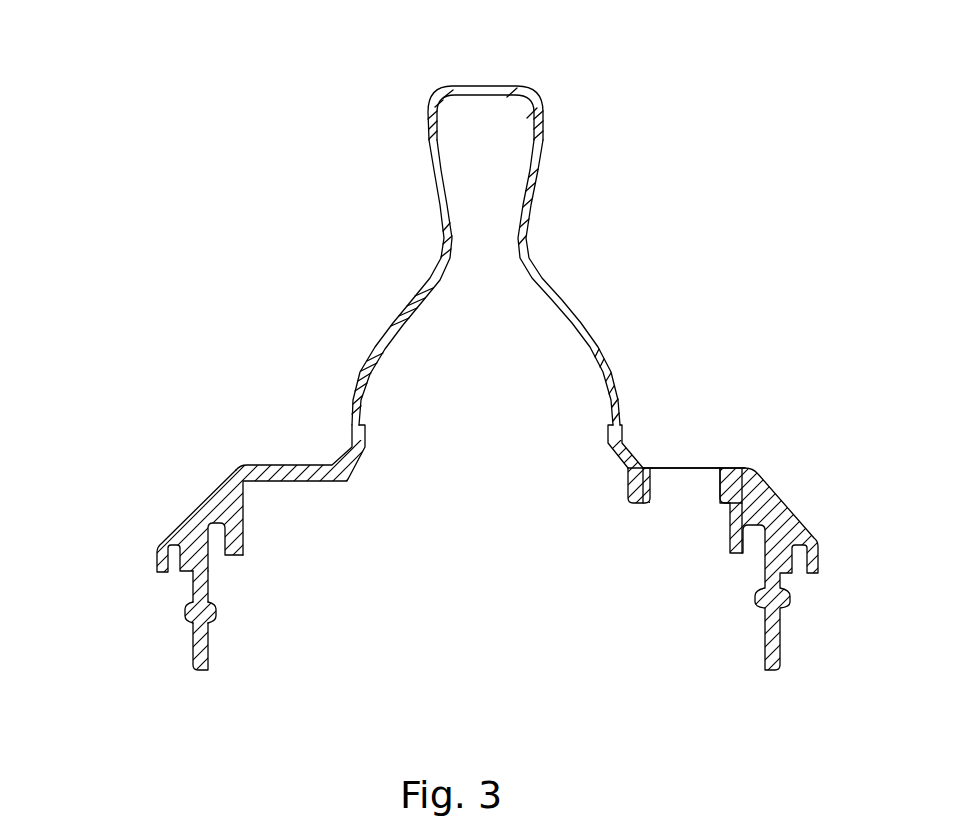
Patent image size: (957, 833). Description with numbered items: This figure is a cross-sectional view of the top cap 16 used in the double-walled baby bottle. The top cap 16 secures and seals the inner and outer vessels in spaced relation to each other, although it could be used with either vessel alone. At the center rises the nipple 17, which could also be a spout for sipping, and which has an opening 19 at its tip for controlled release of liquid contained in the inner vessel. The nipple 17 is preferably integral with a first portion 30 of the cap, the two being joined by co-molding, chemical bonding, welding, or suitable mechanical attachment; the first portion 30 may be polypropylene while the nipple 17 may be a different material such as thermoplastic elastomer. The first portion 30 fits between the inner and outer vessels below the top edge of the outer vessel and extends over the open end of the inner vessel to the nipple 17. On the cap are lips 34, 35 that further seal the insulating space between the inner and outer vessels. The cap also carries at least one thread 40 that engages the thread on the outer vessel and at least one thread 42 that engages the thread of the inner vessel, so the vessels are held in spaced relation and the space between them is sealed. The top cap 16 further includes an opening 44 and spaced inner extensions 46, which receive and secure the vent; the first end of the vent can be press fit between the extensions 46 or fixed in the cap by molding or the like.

The top cap 16 is at (660, 292).
The nipple 17 is at (388, 328).
The opening 19 is at (488, 87).
The first portion 30 is at (203, 542).
The lip 34 is at (162, 565).
The lip 35 is at (240, 541).
The thread 40 is at (187, 617).
The thread 42 is at (215, 615).
The opening 44 is at (683, 467).
The inner extensions 46 is at (733, 500).